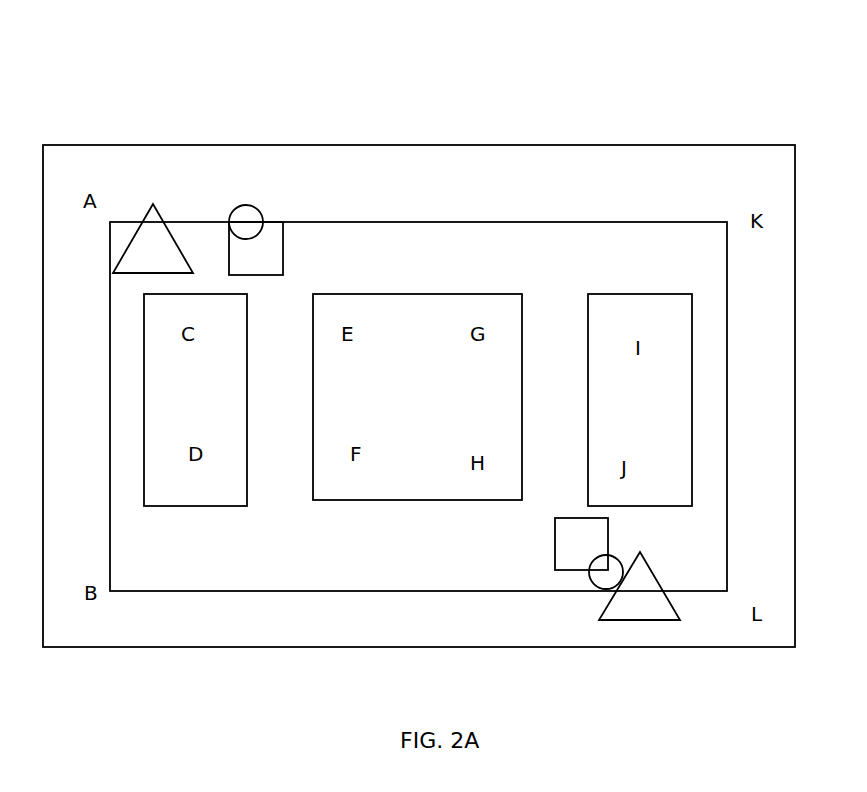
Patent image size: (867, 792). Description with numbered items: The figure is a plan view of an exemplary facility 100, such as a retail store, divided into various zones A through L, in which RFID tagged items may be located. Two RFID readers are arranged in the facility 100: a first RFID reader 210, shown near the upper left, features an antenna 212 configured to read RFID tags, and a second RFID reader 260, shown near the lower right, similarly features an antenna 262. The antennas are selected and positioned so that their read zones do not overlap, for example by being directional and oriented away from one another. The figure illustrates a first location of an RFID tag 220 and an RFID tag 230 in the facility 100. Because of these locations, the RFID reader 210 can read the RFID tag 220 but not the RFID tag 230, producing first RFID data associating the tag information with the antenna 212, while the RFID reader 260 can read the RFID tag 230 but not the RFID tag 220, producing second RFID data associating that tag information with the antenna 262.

The facility 100 is at (717, 92).
The first RFID reader 210 is at (272, 262).
The antenna 212 is at (257, 209).
The RFID tag 220 is at (169, 262).
The RFID tag 230 is at (656, 609).
The second RFID reader 260 is at (597, 556).
The antenna 262 is at (593, 584).